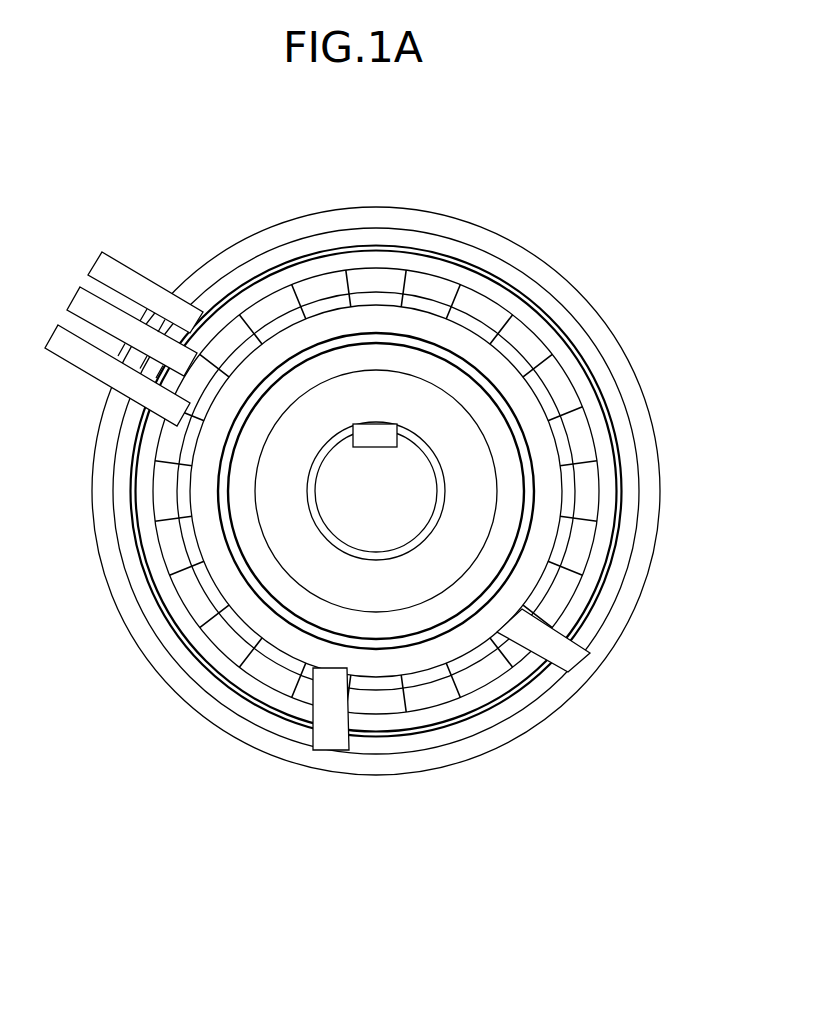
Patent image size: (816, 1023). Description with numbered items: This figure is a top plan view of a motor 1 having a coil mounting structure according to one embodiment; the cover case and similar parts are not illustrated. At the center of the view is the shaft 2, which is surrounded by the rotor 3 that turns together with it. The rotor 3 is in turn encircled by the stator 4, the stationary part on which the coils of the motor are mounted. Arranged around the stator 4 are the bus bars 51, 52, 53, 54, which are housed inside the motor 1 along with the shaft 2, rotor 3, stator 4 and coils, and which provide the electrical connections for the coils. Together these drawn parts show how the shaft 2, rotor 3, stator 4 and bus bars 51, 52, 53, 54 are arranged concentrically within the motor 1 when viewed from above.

The motor 1 is at (138, 178).
The shaft 2 is at (346, 475).
The rotor 3 is at (414, 410).
The stator 4 is at (643, 453).
The bus bar 51 is at (380, 703).
The bus bar 52 is at (558, 343).
The bus bar 53 is at (517, 278).
The bus bar 54 is at (473, 632).